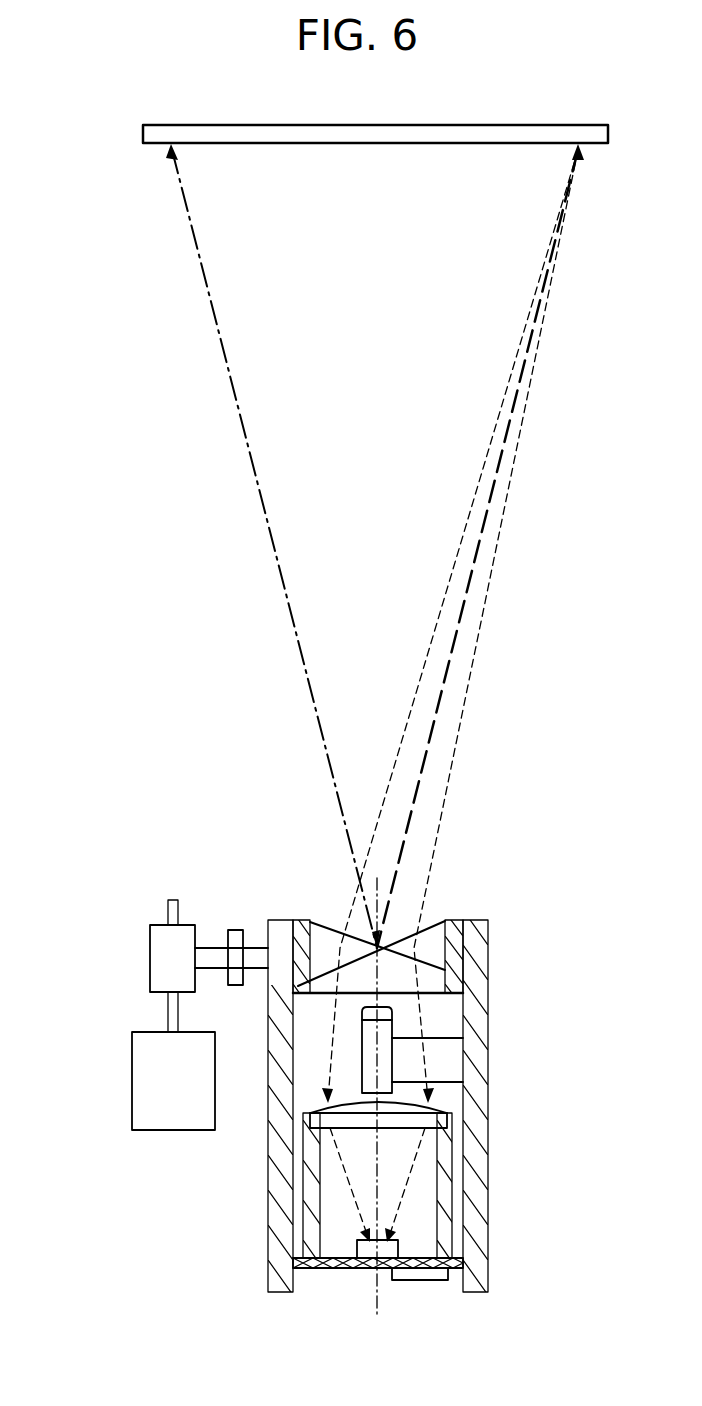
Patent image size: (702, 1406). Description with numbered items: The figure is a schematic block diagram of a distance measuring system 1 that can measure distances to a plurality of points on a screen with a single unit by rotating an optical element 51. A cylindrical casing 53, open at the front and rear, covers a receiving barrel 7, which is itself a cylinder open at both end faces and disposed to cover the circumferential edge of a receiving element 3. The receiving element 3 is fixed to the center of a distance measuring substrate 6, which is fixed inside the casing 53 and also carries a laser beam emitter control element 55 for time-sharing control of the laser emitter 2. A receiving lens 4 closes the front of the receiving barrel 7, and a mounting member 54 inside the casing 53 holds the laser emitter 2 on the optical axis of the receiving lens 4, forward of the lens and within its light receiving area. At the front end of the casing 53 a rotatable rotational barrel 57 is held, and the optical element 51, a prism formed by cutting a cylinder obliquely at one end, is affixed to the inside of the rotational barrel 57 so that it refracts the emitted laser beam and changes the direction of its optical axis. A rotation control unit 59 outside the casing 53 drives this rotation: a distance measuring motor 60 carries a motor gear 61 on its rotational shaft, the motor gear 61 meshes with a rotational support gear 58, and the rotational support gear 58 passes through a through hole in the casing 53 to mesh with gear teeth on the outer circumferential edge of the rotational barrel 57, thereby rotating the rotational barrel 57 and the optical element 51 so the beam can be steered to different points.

The distance measuring system 1 is at (553, 820).
The laser emitter 2 is at (383, 1028).
The receiving element 3 is at (368, 1253).
The receiving lens 4 is at (303, 1122).
The distance measuring substrate 6 is at (313, 1270).
The receiving barrel 7 is at (313, 1220).
The optical element 51 is at (437, 958).
The casing 53 is at (480, 1288).
The mounting member 54 is at (455, 1073).
The laser beam emitter control element 55 is at (417, 1282).
The rotational barrel 57 is at (304, 928).
The rotational support gear 58 is at (215, 955).
The rotation control unit 59 is at (126, 1113).
The distance measuring motor 60 is at (153, 1061).
The motor gear 61 is at (155, 958).